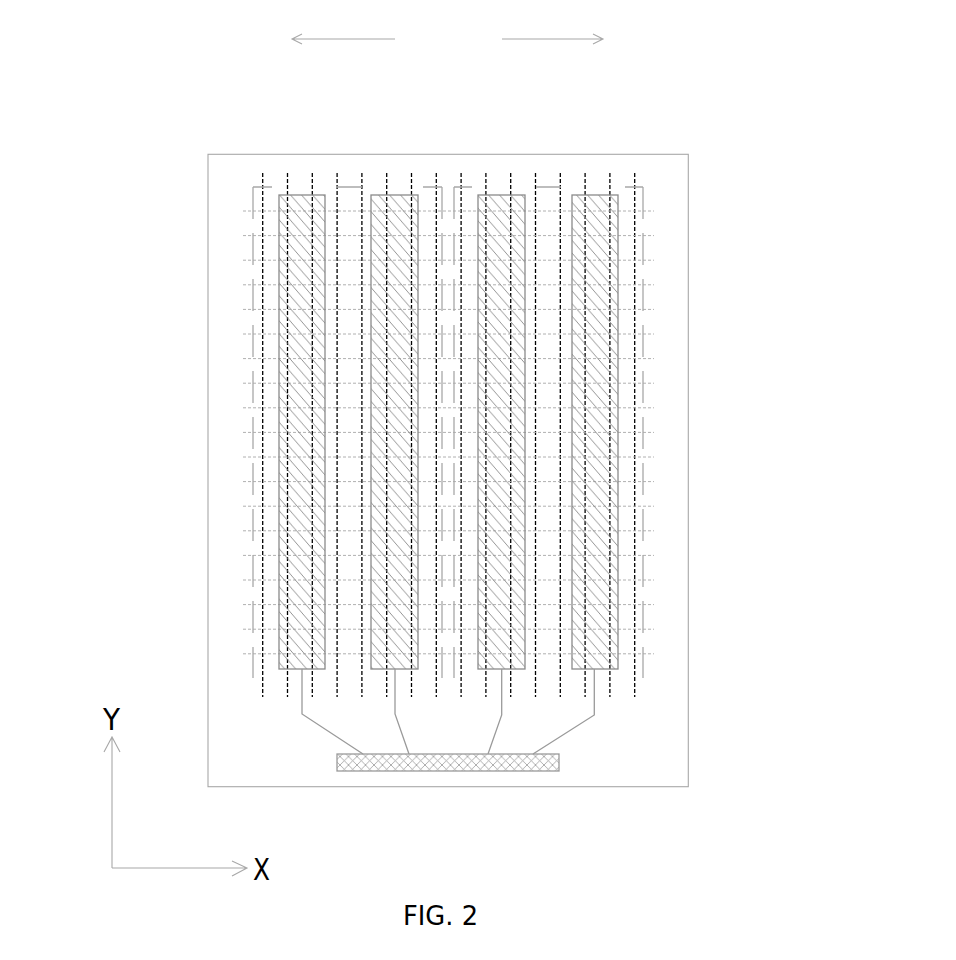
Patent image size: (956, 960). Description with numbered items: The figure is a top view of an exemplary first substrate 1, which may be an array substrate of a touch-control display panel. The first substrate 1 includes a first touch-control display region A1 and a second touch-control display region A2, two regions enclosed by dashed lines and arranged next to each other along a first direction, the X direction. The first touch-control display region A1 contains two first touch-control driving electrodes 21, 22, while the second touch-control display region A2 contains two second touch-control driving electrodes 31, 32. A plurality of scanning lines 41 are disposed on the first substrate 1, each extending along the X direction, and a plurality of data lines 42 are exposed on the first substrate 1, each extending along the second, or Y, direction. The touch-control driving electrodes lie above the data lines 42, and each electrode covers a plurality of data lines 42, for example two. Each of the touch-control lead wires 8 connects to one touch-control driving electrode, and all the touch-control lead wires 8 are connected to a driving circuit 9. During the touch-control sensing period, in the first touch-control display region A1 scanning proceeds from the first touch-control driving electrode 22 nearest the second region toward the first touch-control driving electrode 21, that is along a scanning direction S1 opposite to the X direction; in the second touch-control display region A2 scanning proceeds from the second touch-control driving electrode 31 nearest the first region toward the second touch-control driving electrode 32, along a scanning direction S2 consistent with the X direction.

The first substrate 1 is at (688, 430).
The touch-control lead wires 8 is at (302, 703).
The driving circuit 9 is at (513, 771).
The first touch-control driving electrode 21 is at (297, 215).
The first touch-control driving electrode 22 is at (395, 212).
The second touch-control driving electrode 31 is at (503, 215).
The second touch-control driving electrode 32 is at (597, 210).
The scanning lines 41 is at (250, 532).
The data lines 42 is at (635, 687).
The first touch-control display region A1 is at (252, 414).
The second touch-control display region A2 is at (638, 414).
The scanning direction S1 is at (343, 22).
The scanning direction S2 is at (552, 23).